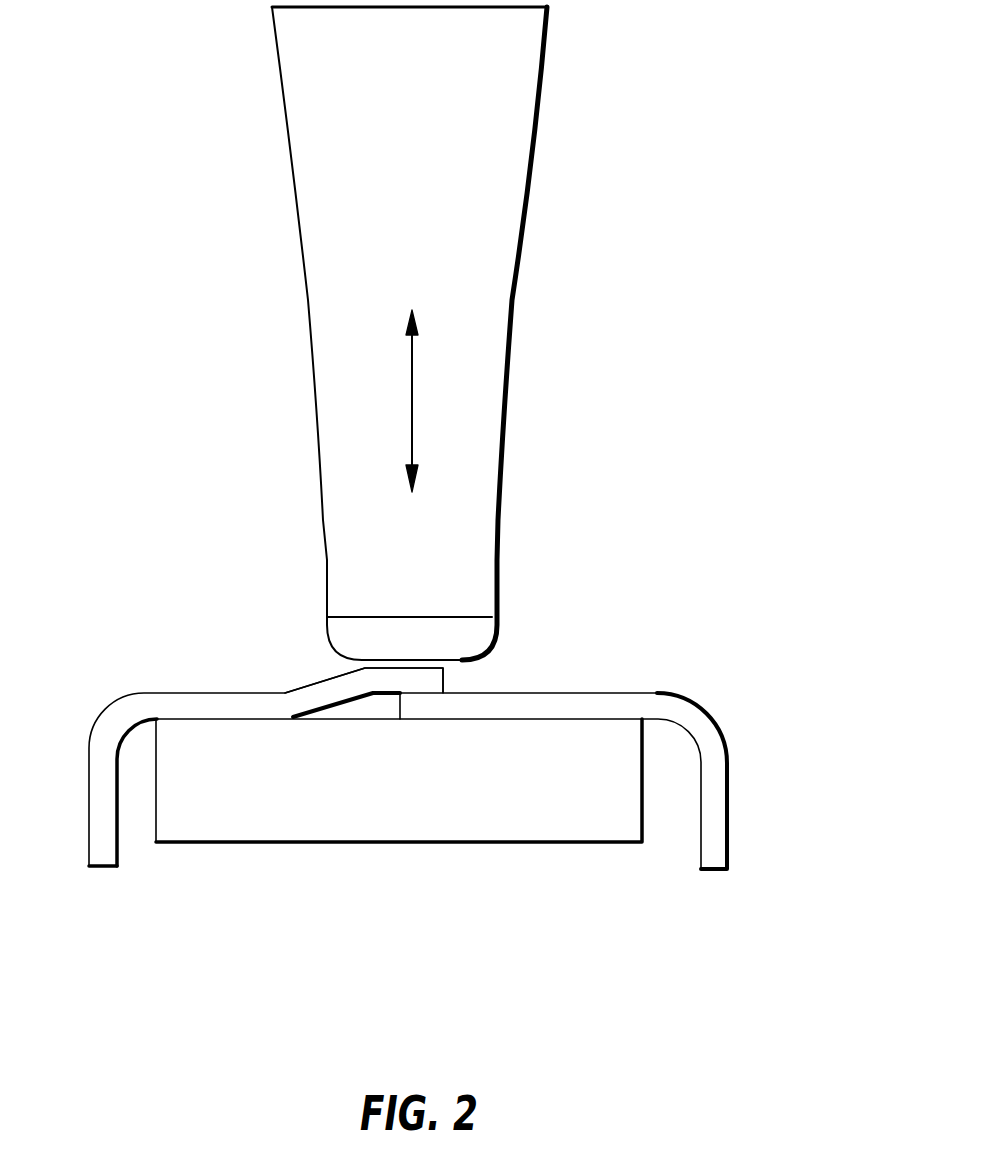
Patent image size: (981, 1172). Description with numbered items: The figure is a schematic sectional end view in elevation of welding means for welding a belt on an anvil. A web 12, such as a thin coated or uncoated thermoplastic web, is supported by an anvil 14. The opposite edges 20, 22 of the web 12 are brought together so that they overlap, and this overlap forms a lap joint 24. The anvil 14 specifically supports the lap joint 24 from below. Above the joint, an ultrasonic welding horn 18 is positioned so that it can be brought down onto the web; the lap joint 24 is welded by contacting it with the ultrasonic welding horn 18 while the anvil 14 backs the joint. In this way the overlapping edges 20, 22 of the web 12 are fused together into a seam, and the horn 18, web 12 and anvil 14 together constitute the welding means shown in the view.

The web 12 is at (728, 828).
The anvil 14 is at (533, 833).
The ultrasonic welding horn 18 is at (517, 272).
The edge 20 is at (398, 703).
The edge 22 is at (447, 680).
The lap joint 24 is at (318, 657).